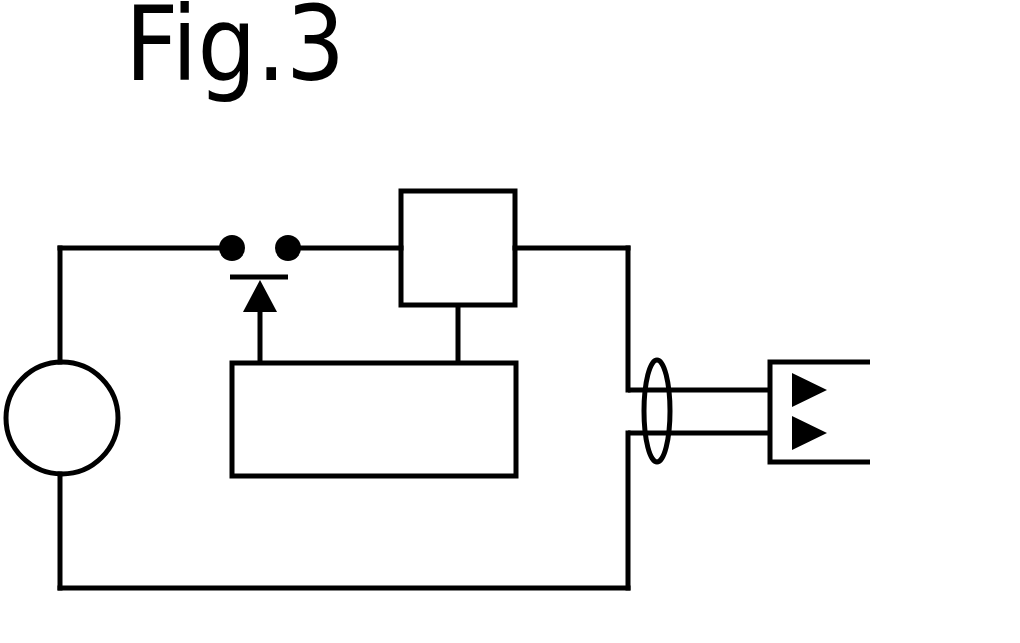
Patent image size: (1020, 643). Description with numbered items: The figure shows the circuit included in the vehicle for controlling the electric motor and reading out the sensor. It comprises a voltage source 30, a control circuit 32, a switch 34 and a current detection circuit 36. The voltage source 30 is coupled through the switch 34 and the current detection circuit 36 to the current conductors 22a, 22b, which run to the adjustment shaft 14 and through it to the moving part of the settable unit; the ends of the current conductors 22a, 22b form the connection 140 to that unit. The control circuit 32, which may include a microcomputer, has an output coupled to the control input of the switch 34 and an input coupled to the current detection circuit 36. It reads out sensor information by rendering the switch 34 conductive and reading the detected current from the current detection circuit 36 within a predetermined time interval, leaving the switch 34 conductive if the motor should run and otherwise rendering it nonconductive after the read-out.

The adjustment shaft 14 is at (812, 362).
The current conductor 22a is at (725, 388).
The current conductor 22b is at (745, 437).
The voltage source 30 is at (104, 448).
The control circuit 32 is at (518, 417).
The switch 34 is at (258, 248).
The current detection circuit 36 is at (457, 189).
The connection 140 is at (655, 360).